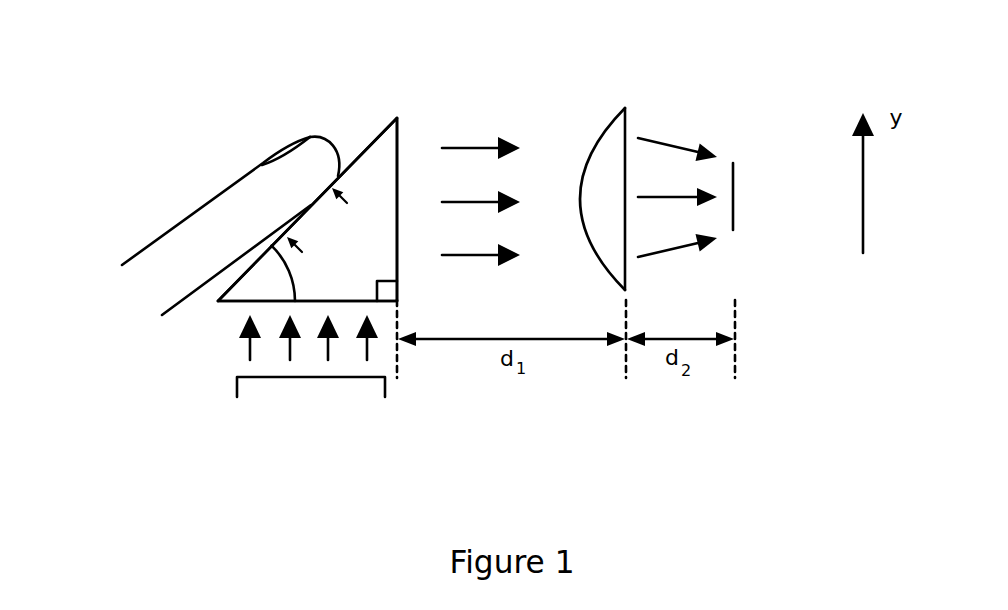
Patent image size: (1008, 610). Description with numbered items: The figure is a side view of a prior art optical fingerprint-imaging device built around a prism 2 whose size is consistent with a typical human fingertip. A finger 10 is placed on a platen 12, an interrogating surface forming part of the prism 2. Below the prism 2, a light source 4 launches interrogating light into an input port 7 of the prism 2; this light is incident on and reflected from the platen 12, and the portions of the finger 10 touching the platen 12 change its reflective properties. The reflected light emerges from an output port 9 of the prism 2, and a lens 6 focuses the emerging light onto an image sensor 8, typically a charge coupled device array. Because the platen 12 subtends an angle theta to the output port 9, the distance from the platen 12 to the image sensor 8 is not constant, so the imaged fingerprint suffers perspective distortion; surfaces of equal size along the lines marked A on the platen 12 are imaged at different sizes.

The prism 2 is at (405, 110).
The light source 4 is at (385, 377).
The lens 6 is at (623, 107).
The input port 7 is at (363, 302).
The image sensor 8 is at (733, 218).
The output port 9 is at (397, 210).
The finger 10 is at (185, 217).
The platen 12 is at (358, 153).